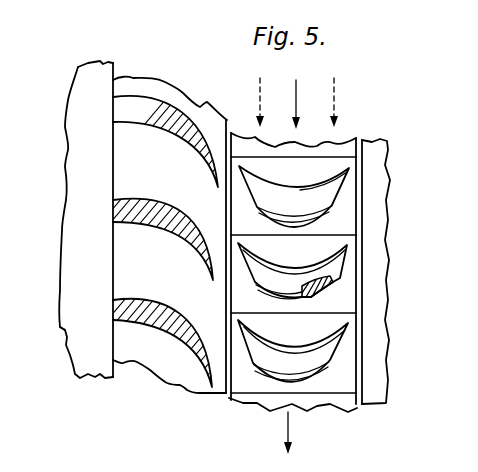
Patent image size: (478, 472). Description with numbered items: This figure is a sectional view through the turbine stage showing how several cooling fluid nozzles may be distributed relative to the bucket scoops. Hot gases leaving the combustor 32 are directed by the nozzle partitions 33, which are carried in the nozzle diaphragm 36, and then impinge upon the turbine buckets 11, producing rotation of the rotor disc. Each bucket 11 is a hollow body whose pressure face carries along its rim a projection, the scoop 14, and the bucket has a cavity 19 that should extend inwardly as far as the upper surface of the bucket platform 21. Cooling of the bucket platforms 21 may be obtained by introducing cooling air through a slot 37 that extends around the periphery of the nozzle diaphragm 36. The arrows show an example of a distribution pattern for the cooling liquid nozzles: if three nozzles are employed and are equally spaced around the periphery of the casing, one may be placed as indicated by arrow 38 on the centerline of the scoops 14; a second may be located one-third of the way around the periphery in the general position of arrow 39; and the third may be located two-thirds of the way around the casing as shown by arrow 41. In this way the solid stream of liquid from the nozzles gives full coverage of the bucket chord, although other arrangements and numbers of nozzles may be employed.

The turbine bucket 11 is at (297, 197).
The scoop 14 is at (274, 220).
The cavity 19 is at (325, 285).
The bucket platform 21 is at (238, 199).
The combustor 32 is at (62, 327).
The nozzle partition 33 is at (170, 128).
The nozzle diaphragm 36 is at (120, 254).
The slot 37 is at (227, 397).
The arrow 38 is at (296, 96).
The arrow 39 is at (258, 83).
The arrow 41 is at (336, 98).